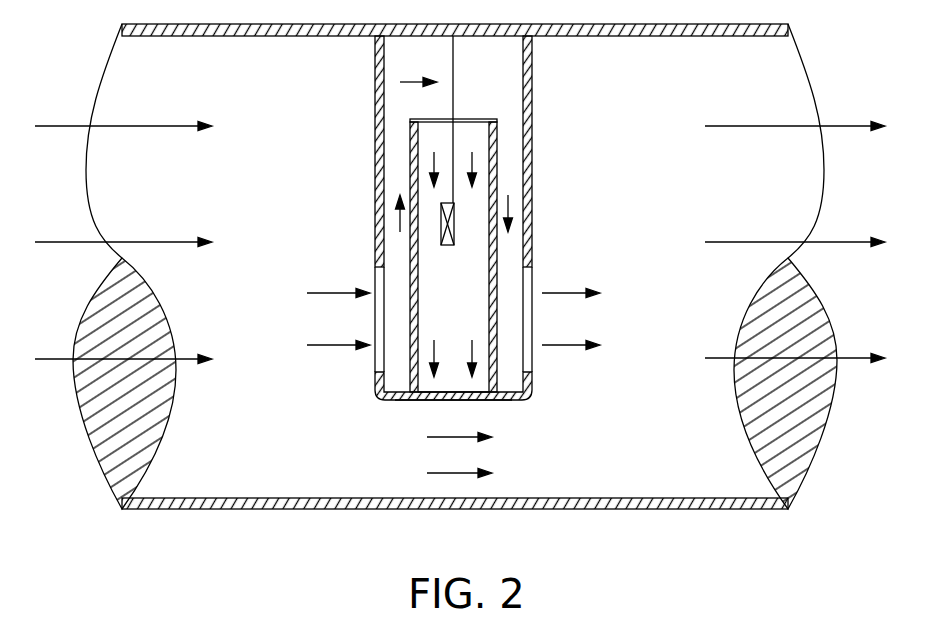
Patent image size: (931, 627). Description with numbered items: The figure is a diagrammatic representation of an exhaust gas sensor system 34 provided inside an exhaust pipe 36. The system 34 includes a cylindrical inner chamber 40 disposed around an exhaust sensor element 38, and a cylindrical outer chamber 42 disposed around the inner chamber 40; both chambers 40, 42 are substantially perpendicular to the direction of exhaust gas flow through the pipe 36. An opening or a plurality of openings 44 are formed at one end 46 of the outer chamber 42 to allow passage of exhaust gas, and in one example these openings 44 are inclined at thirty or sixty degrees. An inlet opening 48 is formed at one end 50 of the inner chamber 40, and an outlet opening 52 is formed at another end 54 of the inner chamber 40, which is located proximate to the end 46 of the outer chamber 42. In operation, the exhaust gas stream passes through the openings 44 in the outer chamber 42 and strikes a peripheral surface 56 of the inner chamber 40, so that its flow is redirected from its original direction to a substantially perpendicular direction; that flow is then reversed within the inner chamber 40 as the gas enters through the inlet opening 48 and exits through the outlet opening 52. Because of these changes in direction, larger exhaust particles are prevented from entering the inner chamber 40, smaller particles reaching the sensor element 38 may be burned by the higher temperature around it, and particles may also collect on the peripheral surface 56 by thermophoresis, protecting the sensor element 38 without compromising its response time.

The exhaust gas sensor system 34 is at (359, 88).
The exhaust pipe 36 is at (695, 510).
The exhaust sensor element 38 is at (448, 245).
The cylindrical inner chamber 40 is at (497, 248).
The cylindrical outer chamber 42 is at (532, 92).
The openings 44 is at (375, 283).
The end of the outer chamber 46 is at (392, 400).
The inlet opening 48 is at (473, 120).
The end of the inner chamber 50 is at (497, 138).
The outlet opening 52 is at (450, 400).
The another end of the inner chamber 54 is at (497, 377).
The peripheral surface 56 is at (410, 262).